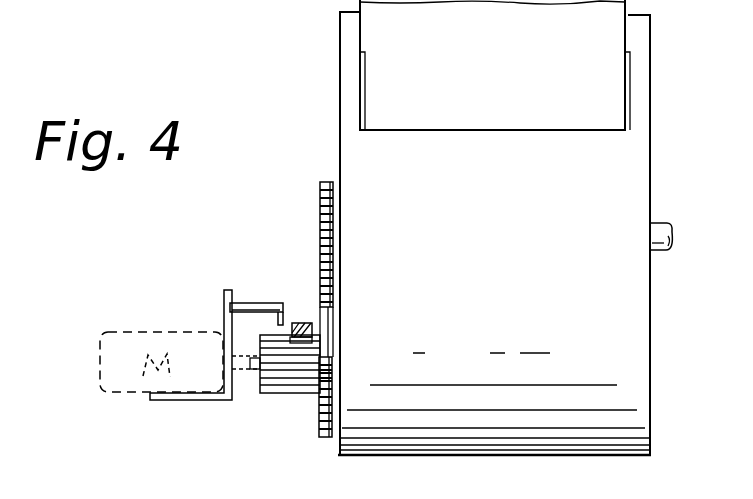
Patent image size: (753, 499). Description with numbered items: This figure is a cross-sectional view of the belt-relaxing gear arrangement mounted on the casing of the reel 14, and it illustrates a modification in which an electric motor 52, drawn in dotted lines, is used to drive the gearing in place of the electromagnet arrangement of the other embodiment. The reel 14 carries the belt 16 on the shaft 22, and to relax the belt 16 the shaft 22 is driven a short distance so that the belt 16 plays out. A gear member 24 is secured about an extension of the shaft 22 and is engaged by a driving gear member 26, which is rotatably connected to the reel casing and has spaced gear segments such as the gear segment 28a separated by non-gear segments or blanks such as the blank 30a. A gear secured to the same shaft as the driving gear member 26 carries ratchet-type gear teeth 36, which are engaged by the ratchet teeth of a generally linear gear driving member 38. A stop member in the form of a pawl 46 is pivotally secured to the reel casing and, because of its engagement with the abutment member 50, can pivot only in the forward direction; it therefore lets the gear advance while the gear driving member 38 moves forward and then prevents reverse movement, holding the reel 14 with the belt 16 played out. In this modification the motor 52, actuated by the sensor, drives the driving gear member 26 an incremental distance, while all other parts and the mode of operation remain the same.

The reel 14 is at (628, 298).
The belt 16 is at (603, 97).
The shaft 22 is at (665, 224).
The gear member 24 is at (323, 198).
The driving gear member 26 is at (320, 408).
The gear segment 28a is at (330, 375).
The non-gear segment 30a is at (328, 313).
The ratchet-type gear teeth 36 is at (268, 380).
The gear driving member 38 is at (304, 323).
The pawl 46 is at (275, 323).
The abutment member 50 is at (248, 303).
The electric motor 52 is at (100, 352).